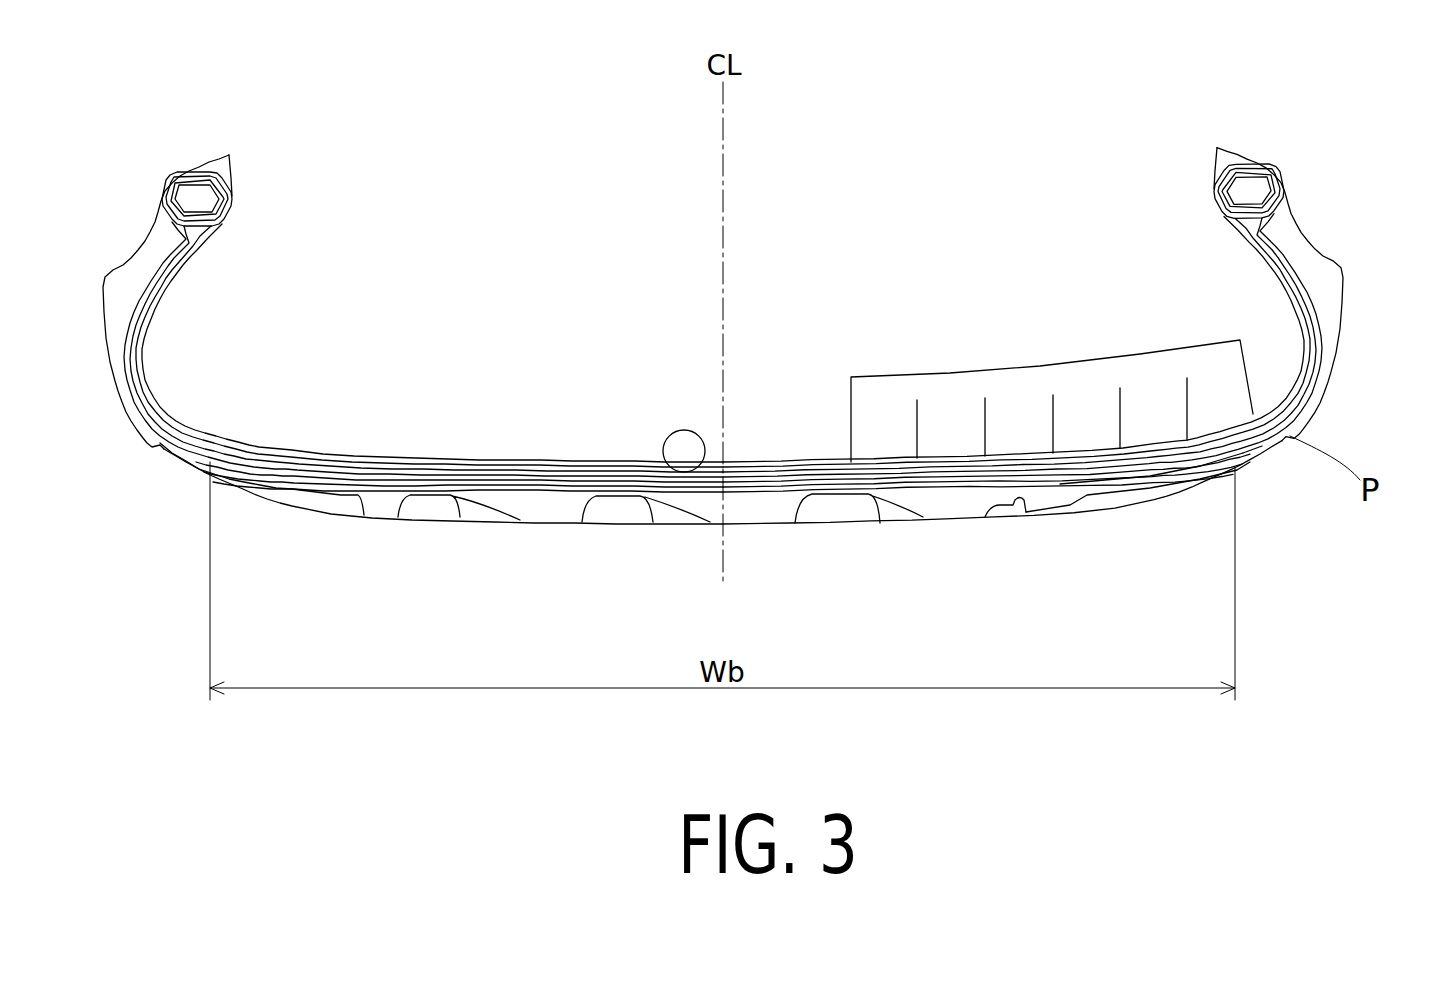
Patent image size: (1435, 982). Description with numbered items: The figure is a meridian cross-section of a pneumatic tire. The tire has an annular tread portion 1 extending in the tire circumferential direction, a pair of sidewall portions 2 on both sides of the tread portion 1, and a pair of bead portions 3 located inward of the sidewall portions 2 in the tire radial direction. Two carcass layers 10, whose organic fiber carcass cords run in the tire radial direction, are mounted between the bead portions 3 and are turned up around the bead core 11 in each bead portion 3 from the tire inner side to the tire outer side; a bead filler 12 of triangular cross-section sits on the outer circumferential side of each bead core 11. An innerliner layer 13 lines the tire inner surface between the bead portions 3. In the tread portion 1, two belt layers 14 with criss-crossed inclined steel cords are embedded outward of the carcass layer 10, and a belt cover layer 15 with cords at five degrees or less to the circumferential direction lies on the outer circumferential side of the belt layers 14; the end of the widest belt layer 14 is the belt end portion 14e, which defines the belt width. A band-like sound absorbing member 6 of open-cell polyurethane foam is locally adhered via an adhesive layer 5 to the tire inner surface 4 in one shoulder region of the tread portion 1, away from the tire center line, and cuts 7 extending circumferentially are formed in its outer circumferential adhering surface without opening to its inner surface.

The tread portion 1 is at (791, 539).
The sidewall portions 2 is at (1356, 357).
The bead portions 3 is at (1303, 197).
The tire inner surface 4 is at (673, 470).
The adhesive layer 5 is at (944, 488).
The band-like sound absorbing member 6 is at (1082, 393).
The cuts 7 is at (987, 418).
The carcass layer 10 is at (1298, 405).
The bead core 11 is at (1248, 190).
The bead filler 12 is at (1264, 227).
The innerliner layer 13 is at (1283, 273).
The belt layers 14 is at (1093, 483).
The belt end portion 14e is at (1246, 443).
The belt cover layer 15 is at (1180, 481).